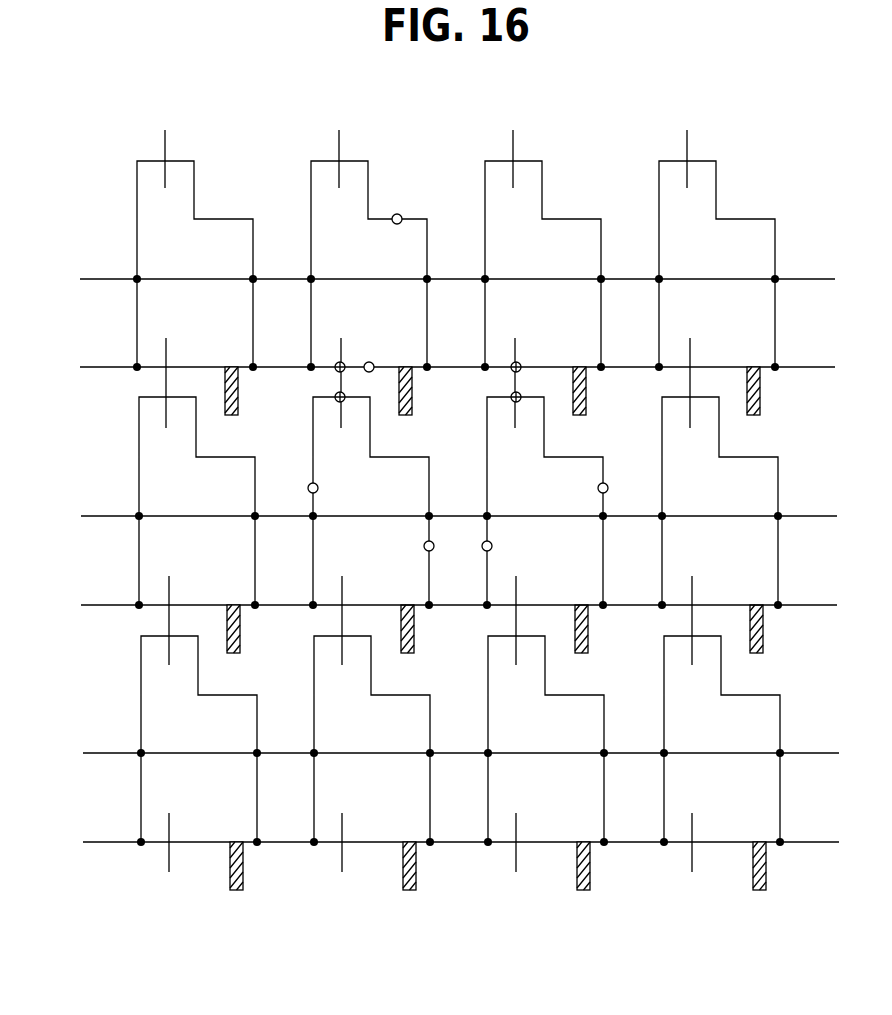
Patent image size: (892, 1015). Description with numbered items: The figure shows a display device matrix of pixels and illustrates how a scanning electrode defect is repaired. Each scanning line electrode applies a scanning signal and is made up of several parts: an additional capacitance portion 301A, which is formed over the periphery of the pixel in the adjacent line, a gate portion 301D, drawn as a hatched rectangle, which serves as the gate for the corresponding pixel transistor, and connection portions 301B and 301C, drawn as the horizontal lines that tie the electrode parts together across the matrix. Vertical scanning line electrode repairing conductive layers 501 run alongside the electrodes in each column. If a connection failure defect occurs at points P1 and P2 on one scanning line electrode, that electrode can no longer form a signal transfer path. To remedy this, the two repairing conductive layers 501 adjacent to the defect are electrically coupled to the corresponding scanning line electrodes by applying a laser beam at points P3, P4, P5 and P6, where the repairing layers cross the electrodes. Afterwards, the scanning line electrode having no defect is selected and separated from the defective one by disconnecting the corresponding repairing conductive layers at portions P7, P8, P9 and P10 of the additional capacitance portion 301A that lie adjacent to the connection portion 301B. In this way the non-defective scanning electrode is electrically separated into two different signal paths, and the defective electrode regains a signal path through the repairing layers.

The scanning line electrode repairing conductive layer 501 is at (166, 385).
The additional capacitance portion 301A is at (139, 474).
The connection portion 301B is at (283, 516).
The connection portion 301C is at (283, 605).
The gate portion 301D is at (240, 654).
The connection failure defect point P1 is at (397, 214).
The connection failure defect point P2 is at (369, 362).
The laser coupling point P3 is at (340, 362).
The laser coupling point P4 is at (345, 400).
The laser coupling point P5 is at (516, 362).
The laser coupling point P6 is at (521, 400).
The disconnection point of additional capacitance portion P7 is at (332, 490).
The disconnection point of additional capacitance portion P8 is at (446, 554).
The disconnection point of additional capacitance portion P9 is at (504, 554).
The disconnection point of additional capacitance portion P10 is at (628, 492).